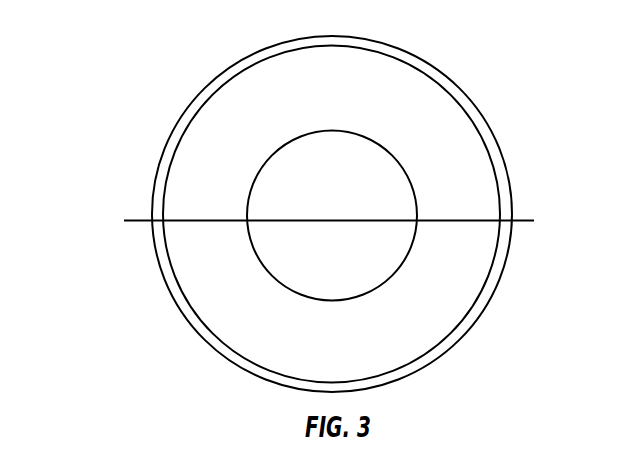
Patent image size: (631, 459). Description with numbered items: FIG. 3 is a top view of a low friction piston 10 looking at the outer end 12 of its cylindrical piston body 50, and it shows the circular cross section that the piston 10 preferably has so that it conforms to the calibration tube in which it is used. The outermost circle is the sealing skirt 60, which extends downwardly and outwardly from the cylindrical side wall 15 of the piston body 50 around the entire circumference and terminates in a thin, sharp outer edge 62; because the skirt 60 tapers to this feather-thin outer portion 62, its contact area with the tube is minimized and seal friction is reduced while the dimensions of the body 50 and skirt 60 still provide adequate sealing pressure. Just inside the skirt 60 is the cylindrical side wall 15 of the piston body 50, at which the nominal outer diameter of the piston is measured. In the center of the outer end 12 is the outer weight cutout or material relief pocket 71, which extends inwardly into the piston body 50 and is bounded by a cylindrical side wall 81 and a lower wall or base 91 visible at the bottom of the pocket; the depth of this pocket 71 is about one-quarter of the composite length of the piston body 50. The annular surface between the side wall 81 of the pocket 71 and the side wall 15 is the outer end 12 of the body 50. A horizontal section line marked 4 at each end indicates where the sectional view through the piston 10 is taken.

The low friction piston 10 is at (128, 46).
The outer end 12 is at (458, 268).
The cylindrical side wall 15 is at (512, 135).
The piston body 50 is at (286, 214).
The sealing skirt 60 is at (310, 214).
The outer portion of skirt 62 is at (527, 299).
The outer weight cutout 71 is at (348, 166).
The cylindrical side wall 81 is at (384, 182).
The base 91 is at (345, 263).
The section line 4- 4 is at (124, 221).